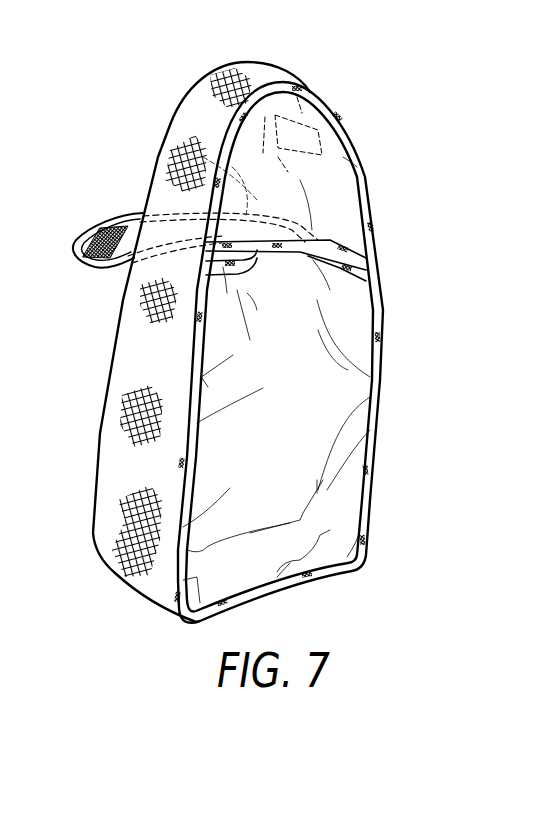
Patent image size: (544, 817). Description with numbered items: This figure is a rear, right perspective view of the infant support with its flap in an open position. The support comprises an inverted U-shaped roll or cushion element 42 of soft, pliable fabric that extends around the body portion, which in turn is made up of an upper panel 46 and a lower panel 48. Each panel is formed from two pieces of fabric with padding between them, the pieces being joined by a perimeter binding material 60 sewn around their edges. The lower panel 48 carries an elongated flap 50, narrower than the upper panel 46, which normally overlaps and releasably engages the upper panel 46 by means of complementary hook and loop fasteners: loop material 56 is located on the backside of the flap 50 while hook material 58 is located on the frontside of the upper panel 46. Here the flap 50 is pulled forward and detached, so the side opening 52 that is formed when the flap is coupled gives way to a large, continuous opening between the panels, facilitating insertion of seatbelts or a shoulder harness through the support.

The inverted U-shaped roll or cushion element 42 is at (197, 107).
The upper panel 46 is at (347, 210).
The lower panel 48 is at (327, 393).
The flap 50 is at (85, 243).
The opening 52 is at (70, 249).
The loop material 56 is at (107, 232).
The hook material 58 is at (302, 138).
The perimeter binding material 60 is at (368, 437).